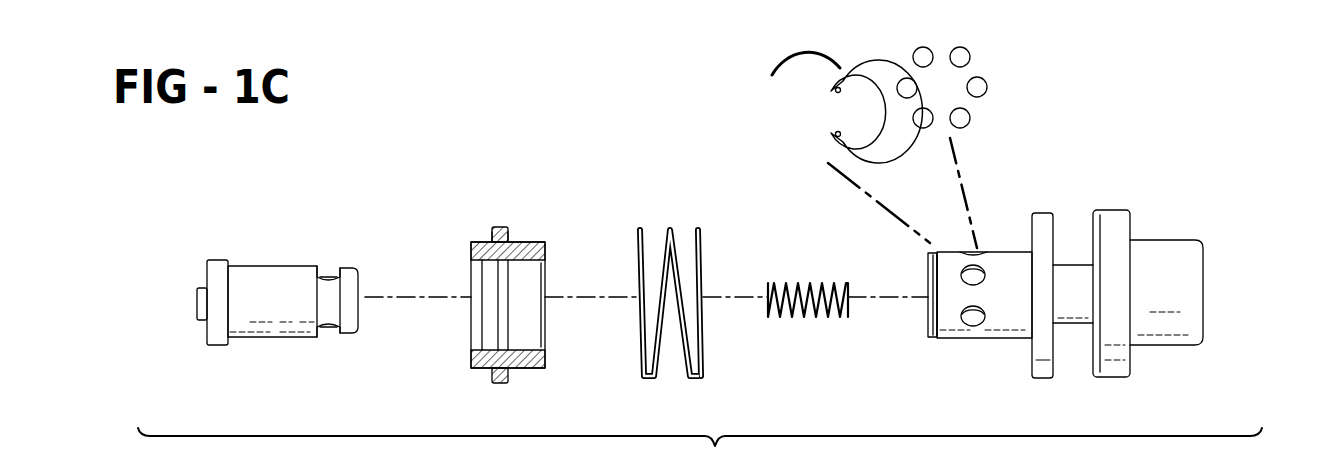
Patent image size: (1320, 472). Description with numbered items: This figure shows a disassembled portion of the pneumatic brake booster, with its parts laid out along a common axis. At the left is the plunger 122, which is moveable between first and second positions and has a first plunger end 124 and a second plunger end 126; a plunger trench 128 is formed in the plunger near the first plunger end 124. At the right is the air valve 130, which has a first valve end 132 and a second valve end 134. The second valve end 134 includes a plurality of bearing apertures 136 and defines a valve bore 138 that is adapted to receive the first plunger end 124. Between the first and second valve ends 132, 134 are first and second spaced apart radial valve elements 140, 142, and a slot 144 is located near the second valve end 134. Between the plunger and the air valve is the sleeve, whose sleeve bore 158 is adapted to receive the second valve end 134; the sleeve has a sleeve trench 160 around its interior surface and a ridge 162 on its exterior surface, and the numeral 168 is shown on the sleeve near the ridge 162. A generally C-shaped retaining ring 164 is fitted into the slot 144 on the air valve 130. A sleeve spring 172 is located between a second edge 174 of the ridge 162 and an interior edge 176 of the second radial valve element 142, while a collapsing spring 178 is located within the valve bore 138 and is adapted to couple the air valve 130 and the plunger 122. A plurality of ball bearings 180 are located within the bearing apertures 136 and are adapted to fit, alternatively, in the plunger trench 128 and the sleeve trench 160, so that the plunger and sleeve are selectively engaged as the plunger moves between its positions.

The plunger 122 is at (272, 256).
The first plunger end 124 is at (345, 265).
The second plunger end 126 is at (215, 262).
The plunger trench 128 is at (330, 337).
The air valve 130 is at (1065, 271).
The first valve end 132 is at (1172, 240).
The second valve end 134 is at (938, 340).
The bearing apertures 136 is at (973, 350).
The valve bore 138 is at (910, 331).
The first radial valve element 140 is at (1112, 358).
The second radial valve element 142 is at (1043, 363).
The slot 144 is at (958, 236).
The sleeve bore 158 is at (527, 258).
The sleeve trench 160 is at (480, 338).
The ridge 162 is at (498, 218).
The retaining ring 164 is at (763, 115).
The bushing shoulder 168 is at (490, 233).
The sleeve spring 172 is at (670, 228).
The second edge of the ridge 174 is at (512, 234).
The interior edge of the second radial valve element 176 is at (1027, 222).
The collapsing spring 178 is at (822, 283).
The ball bearings 180 is at (998, 90).